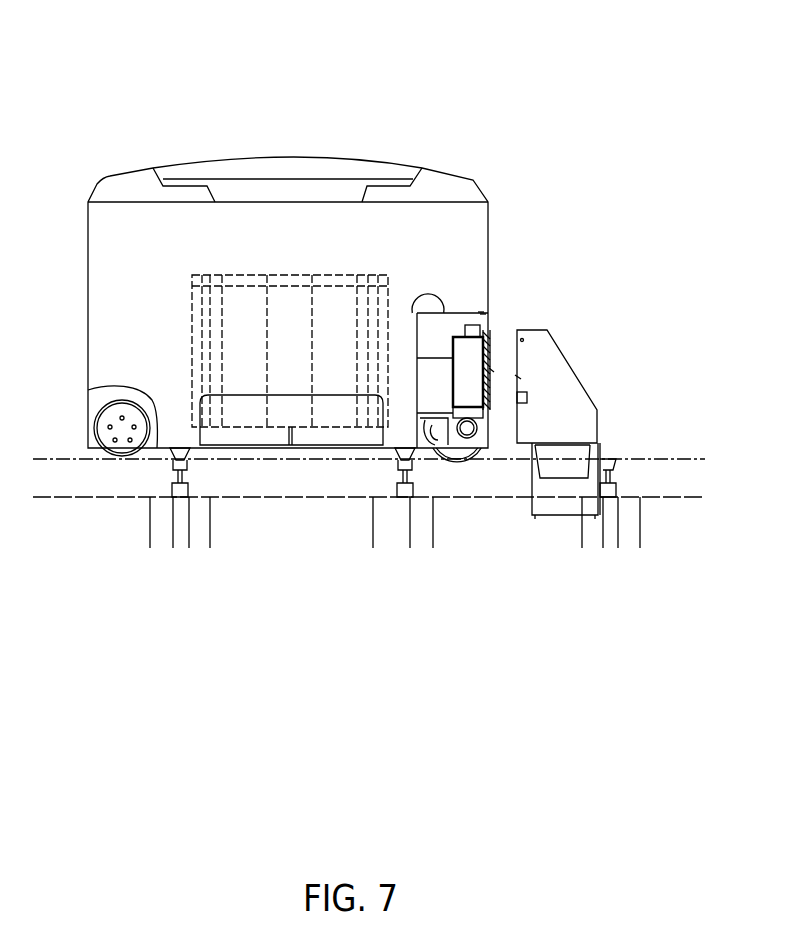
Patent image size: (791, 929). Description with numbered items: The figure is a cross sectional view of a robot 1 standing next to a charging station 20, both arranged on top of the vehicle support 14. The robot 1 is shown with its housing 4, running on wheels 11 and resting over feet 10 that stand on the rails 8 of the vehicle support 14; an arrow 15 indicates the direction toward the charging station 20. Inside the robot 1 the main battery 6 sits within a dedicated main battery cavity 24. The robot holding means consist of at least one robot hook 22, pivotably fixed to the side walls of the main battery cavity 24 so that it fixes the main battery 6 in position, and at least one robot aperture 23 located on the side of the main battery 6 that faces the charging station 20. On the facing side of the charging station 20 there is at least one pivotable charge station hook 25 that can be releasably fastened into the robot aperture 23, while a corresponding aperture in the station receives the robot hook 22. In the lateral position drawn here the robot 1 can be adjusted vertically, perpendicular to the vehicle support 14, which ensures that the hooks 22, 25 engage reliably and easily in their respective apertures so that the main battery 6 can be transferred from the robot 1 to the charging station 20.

The robot 1 is at (448, 155).
The housing 4 is at (141, 271).
The main battery 6 is at (476, 387).
The floor rails 8 is at (86, 614).
The fastening feet 10 is at (188, 458).
The wheels 11 is at (105, 418).
The vehicle support 14 is at (266, 478).
The direction of movement 15 is at (694, 525).
The charging station 20 is at (566, 413).
The robot hook 22 is at (483, 312).
The robot aperture 23 is at (492, 372).
The main battery cavity 24 is at (480, 311).
The charge station hook 25 is at (518, 379).